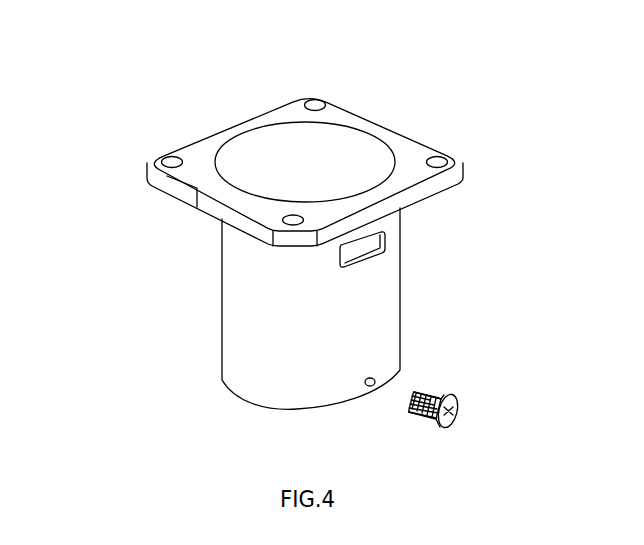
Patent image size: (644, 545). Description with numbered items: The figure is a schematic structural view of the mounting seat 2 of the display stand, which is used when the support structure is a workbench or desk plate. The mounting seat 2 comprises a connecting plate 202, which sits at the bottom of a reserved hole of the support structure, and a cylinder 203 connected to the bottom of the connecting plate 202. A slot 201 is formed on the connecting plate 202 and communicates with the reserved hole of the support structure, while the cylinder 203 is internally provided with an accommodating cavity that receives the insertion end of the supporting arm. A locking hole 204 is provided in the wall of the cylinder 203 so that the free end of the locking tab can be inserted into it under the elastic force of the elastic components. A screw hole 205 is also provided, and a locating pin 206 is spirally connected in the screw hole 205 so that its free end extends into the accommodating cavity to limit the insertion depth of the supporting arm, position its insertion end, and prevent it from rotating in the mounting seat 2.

The mounting seat 2 is at (423, 265).
The slot 201 is at (302, 160).
The connecting plate 202 is at (413, 155).
The cylinder 203 is at (248, 308).
The locking hole 204 is at (370, 258).
The screw hole 205 is at (376, 383).
The locating pin 206 is at (457, 415).